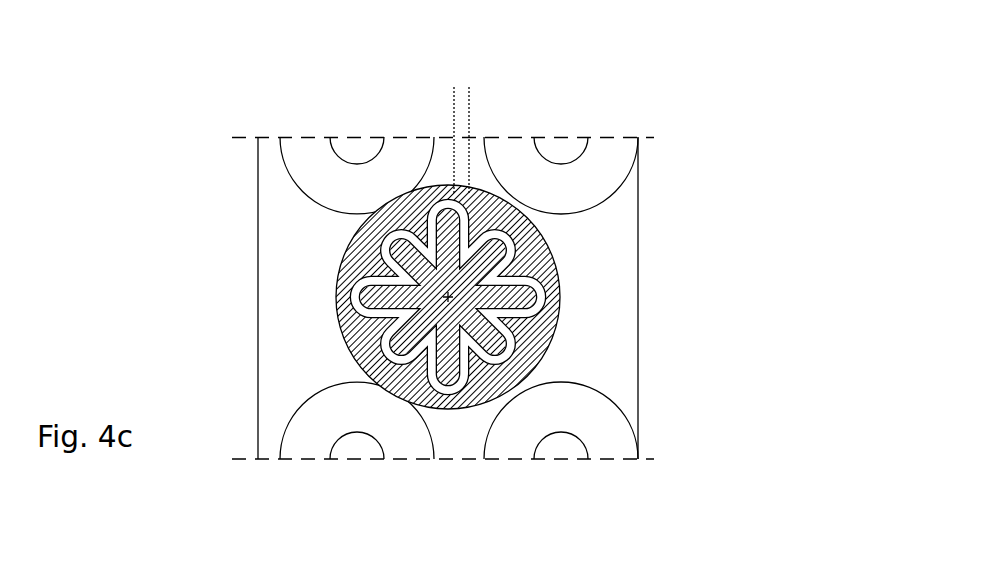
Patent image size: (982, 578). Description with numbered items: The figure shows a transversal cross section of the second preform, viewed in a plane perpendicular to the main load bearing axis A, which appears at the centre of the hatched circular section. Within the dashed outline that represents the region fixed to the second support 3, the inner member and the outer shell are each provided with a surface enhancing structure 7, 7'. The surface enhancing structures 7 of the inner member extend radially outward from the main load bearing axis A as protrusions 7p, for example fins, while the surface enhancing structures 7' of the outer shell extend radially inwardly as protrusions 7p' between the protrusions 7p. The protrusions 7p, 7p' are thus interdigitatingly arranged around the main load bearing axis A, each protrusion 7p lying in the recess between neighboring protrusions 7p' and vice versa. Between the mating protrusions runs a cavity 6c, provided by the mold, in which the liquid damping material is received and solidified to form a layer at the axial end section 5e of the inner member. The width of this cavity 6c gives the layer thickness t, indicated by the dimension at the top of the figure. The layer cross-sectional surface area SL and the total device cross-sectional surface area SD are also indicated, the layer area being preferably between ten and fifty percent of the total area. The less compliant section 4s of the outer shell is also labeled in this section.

The second support 3 is at (587, 337).
The surface enhancing structure 7 is at (627, 293).
The surface enhancing structure 7' is at (548, 298).
The protrusion 7p is at (347, 229).
The protrusion 7p' is at (281, 270).
The cavity 6c is at (528, 313).
The axial end section 5e is at (472, 323).
The less compliant section 4s is at (493, 210).
The main load bearing axis A is at (448, 297).
The total device cross-sectional surface area SD is at (452, 385).
The layer cross-sectional surface area SL is at (487, 357).
The layer thickness t is at (507, 93).